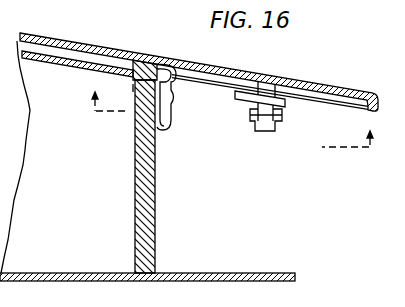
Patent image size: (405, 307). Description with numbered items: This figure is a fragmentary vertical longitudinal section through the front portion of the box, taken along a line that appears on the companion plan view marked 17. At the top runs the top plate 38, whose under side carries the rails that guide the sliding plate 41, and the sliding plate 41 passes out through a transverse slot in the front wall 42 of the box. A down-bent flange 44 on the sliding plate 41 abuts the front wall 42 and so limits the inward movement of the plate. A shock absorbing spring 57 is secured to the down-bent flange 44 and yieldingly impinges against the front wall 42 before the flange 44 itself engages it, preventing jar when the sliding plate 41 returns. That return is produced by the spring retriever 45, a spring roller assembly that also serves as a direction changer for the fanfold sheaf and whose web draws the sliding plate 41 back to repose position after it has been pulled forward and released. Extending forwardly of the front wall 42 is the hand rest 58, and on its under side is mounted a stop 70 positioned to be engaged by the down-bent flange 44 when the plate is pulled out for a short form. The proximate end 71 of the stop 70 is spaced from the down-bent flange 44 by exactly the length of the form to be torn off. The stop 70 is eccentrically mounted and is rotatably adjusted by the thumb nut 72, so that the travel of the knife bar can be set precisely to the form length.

The top plate 38 is at (52, 40).
The sliding plate 41 is at (44, 62).
The front wall 42 is at (155, 184).
The down-bent flange 44 is at (174, 74).
The spring retriever 45 is at (133, 89).
The shock absorbing spring 57 is at (167, 130).
The hand rest 58 is at (316, 82).
The stop 70 is at (282, 106).
The proximate end of the stop 71 is at (237, 94).
The thumb nut 72 is at (252, 131).
The section line 17- 17 is at (231, 108).